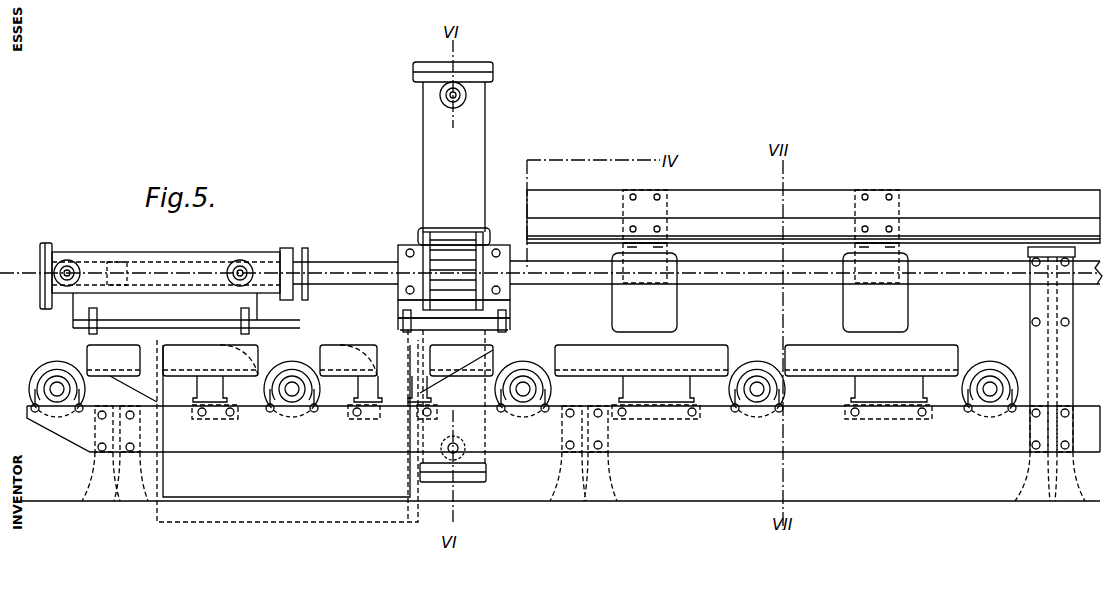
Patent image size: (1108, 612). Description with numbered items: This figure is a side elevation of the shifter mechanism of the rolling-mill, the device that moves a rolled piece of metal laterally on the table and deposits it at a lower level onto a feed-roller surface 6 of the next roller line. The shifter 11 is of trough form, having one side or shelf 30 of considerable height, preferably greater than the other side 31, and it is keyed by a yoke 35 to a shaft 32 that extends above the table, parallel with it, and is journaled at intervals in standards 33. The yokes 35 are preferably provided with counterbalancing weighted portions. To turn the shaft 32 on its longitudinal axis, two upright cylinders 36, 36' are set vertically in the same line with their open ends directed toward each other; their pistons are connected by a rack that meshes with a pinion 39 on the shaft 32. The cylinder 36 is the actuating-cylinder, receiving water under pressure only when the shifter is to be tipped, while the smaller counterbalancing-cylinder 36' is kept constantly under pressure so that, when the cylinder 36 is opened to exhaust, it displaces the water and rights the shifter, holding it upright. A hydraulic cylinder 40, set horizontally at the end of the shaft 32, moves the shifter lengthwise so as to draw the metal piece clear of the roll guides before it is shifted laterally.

The feed-roller surface 6 is at (50, 372).
The shifter 11 is at (813, 205).
The side or shelf 30 is at (813, 204).
The other side 31 is at (813, 229).
The shaft 32 is at (520, 273).
The standards 33 is at (1030, 302).
The yoke 35 is at (760, 261).
The actuating-cylinder 36 is at (453, 136).
The counterbalancing-cylinder 36' is at (321, 427).
The pinion 39 is at (472, 236).
The hydraulic cylinder 40 is at (174, 288).